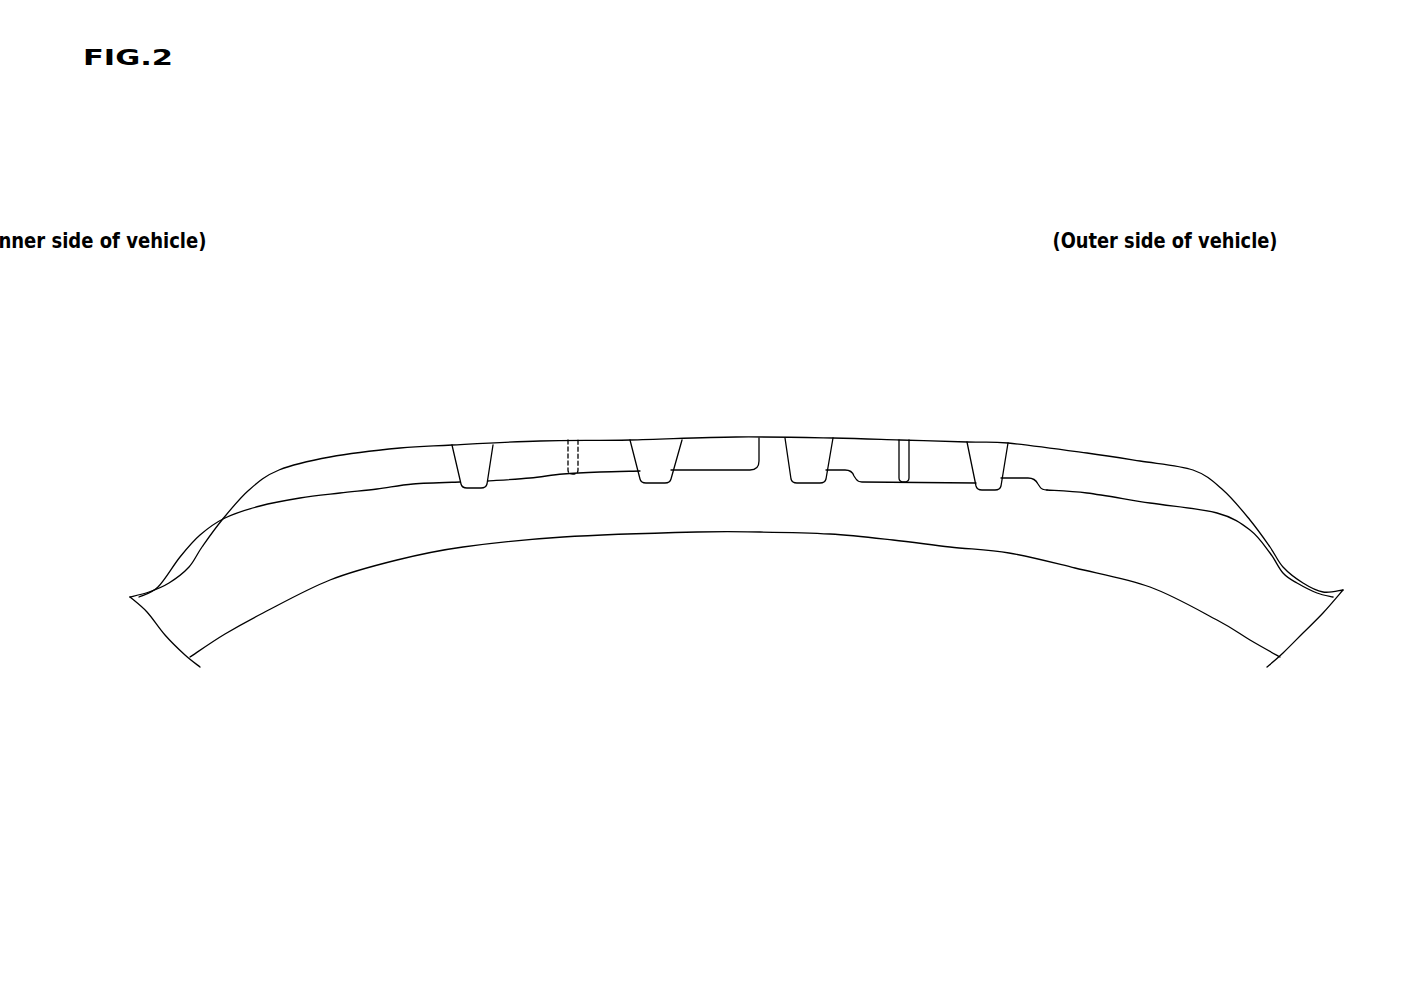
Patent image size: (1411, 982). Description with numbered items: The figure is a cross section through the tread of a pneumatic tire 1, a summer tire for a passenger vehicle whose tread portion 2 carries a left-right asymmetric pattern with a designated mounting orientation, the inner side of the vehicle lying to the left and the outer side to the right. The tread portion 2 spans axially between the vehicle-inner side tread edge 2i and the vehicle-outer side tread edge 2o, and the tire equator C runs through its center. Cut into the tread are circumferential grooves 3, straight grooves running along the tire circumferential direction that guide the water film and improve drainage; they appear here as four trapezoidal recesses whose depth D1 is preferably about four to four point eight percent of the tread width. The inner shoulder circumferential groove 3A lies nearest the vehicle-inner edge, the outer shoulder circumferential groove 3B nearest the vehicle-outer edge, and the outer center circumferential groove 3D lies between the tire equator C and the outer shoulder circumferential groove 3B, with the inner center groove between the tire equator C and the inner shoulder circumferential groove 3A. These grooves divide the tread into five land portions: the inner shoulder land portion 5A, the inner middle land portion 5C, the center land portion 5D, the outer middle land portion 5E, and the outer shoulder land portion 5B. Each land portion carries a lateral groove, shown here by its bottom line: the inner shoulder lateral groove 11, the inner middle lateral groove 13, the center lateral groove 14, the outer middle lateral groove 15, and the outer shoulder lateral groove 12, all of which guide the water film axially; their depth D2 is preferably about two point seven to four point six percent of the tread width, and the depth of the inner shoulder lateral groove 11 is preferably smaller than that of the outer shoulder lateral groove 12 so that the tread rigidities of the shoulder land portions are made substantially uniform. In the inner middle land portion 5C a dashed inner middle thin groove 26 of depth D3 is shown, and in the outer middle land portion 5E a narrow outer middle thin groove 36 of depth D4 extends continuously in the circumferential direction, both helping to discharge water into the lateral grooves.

The pneumatic tire 1 is at (1070, 296).
The tread portion 2 is at (950, 385).
The vehicle-inner side tread edge 2i is at (272, 462).
The vehicle-outer side tread edge 2o is at (1195, 468).
The circumferential grooves 3 is at (665, 446).
The inner shoulder circumferential groove 3A is at (480, 463).
The outer shoulder circumferential groove 3B is at (990, 462).
The outer center circumferential groove 3D is at (818, 468).
The inner shoulder land portion 5A is at (333, 440).
The outer shoulder land portion 5B is at (1135, 435).
The inner middle land portion 5C is at (522, 430).
The center land portion 5D is at (715, 430).
The outer middle land portion 5E is at (875, 433).
The inner shoulder lateral groove 11 is at (398, 484).
The outer shoulder lateral groove 12 is at (1073, 491).
The inner middle lateral groove 13 is at (513, 481).
The center lateral groove 14 is at (707, 471).
The outer middle lateral groove 15 is at (953, 484).
The inner middle thin groove 26 is at (575, 440).
The outer middle thin groove 36 is at (904, 455).
The tire equator C is at (733, 398).
The groove depth of circumferential groove D1 is at (657, 483).
The groove depth of lateral groove D2 is at (380, 520).
The groove depth of inner middle thin groove D3 is at (563, 500).
The groove depth of outer middle thin groove D4 is at (903, 481).